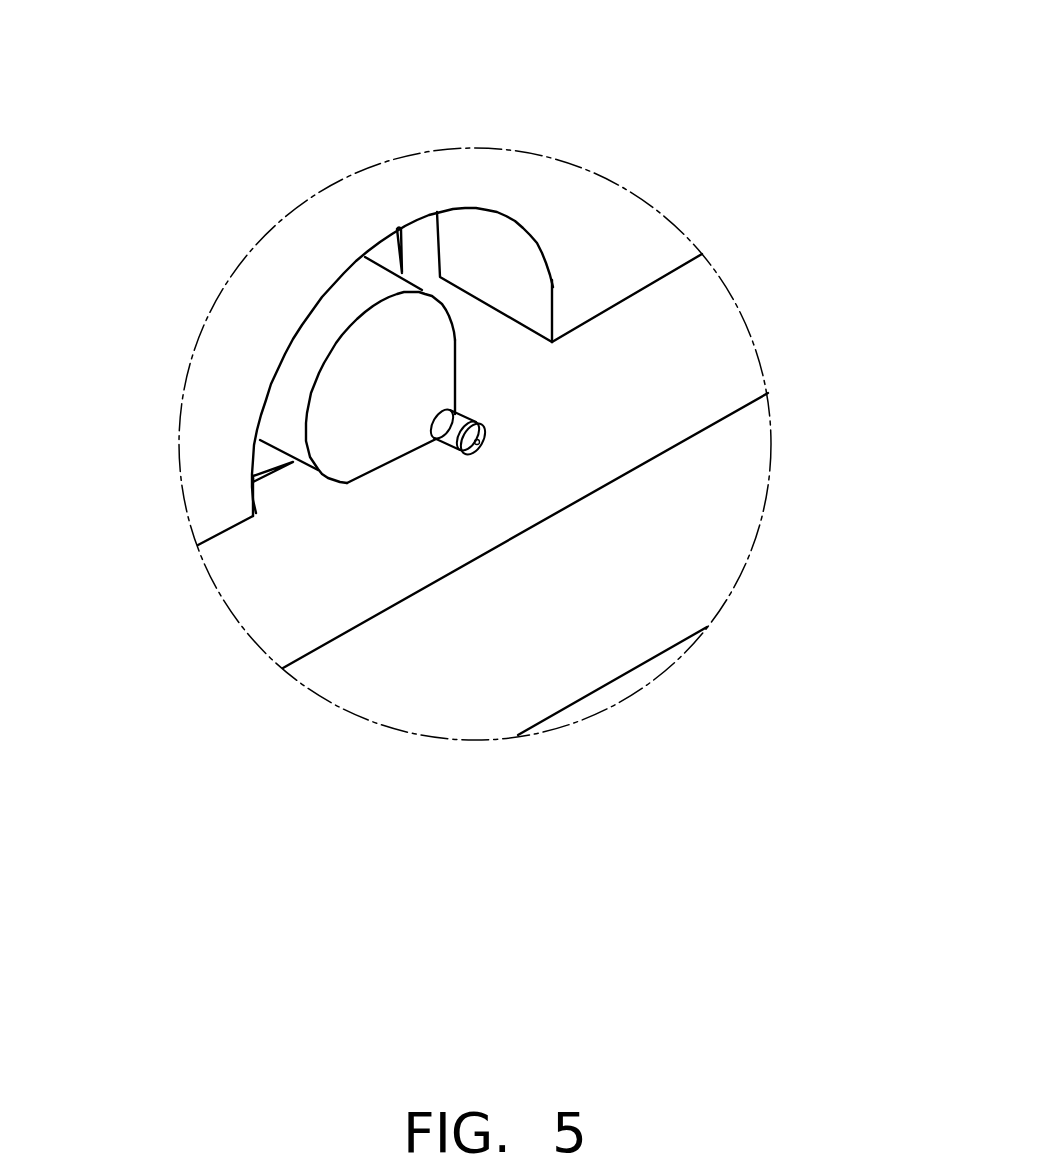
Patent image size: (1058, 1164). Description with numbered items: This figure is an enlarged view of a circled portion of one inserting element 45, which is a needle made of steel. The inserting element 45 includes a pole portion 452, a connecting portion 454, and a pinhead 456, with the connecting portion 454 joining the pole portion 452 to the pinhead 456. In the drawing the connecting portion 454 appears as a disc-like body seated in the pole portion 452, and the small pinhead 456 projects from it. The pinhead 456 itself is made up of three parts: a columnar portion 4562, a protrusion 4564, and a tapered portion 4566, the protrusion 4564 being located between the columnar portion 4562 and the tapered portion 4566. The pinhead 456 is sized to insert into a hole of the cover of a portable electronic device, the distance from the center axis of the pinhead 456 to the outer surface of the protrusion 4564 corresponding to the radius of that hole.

The inserting element 45 is at (618, 52).
The pole portion 452 is at (305, 358).
The connecting portion 454 is at (363, 422).
The pinhead 456 is at (681, 283).
The columnar portion 4562 is at (453, 422).
The protrusion 4564 is at (480, 427).
The tapered portion 4566 is at (480, 448).